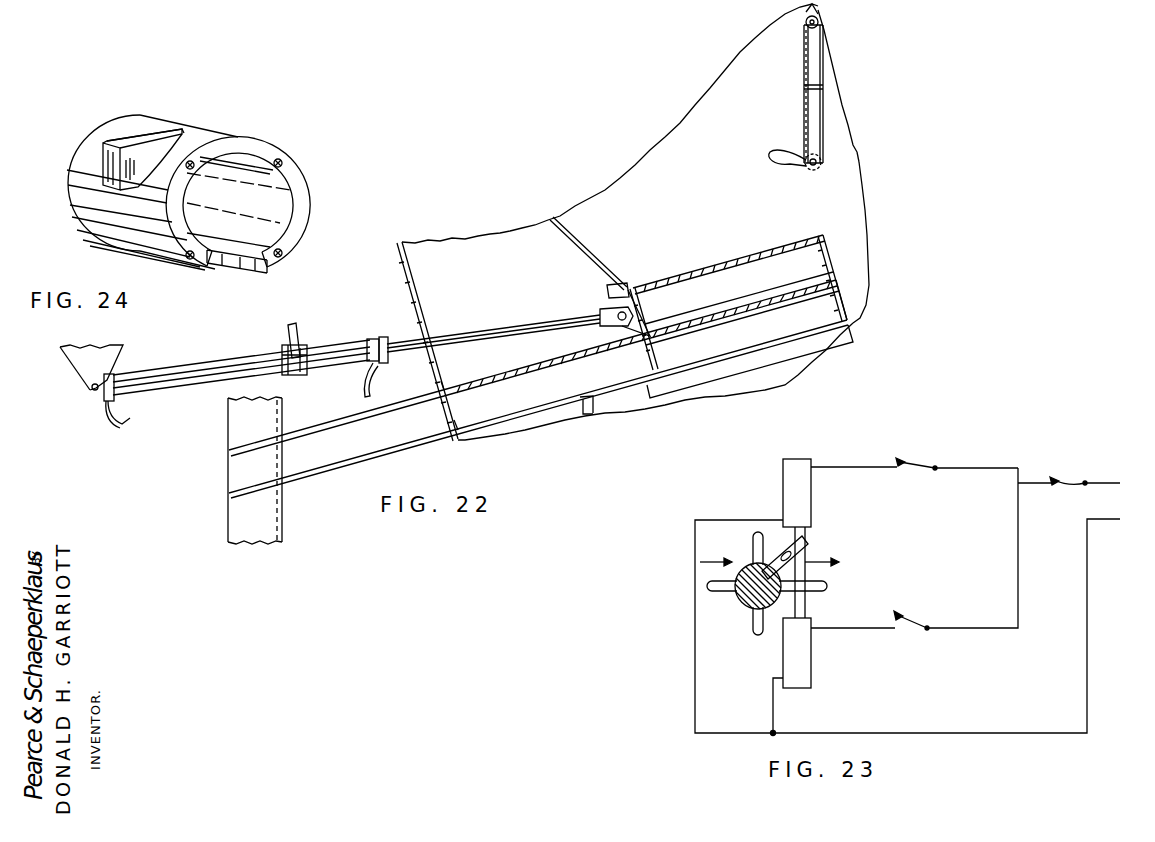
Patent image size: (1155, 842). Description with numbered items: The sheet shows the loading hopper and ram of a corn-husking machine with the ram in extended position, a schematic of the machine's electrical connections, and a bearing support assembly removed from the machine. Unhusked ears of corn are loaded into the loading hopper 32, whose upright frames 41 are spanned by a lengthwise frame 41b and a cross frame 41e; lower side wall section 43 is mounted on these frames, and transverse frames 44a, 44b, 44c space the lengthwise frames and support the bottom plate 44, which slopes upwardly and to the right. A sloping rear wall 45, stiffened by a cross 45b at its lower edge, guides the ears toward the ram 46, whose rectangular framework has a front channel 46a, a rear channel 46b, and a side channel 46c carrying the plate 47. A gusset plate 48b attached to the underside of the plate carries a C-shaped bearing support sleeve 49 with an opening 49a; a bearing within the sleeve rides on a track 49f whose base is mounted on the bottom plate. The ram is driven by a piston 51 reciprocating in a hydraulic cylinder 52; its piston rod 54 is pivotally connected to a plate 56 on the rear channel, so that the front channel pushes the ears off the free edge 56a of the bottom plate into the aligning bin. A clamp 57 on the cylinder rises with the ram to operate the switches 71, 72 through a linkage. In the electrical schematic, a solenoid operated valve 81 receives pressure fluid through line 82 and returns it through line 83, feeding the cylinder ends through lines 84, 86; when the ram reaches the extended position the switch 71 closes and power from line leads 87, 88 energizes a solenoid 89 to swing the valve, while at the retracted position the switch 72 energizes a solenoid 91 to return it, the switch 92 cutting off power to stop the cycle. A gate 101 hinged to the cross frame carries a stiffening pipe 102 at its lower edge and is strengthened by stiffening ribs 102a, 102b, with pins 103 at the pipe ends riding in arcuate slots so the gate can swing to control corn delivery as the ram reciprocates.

In FIG. 22, the loading hopper 32 is at (575, 220).
In FIG. 22, the upright frames 41 is at (237, 508).
In FIG. 22, the lengthwise frame 41b is at (383, 438).
In FIG. 22, the cross frame 41e is at (818, 15).
In FIG. 22, the lower side wall section 43 is at (623, 182).
In FIG. 22, the bottom plate 44 is at (513, 368).
In FIG. 22, the transverse frame 44a is at (447, 420).
In FIG. 22, the transverse frame 44b is at (653, 360).
In FIG. 22, the transverse frame 44c is at (843, 300).
In FIG. 22, the sloping rear wall 45 is at (590, 248).
In FIG. 22, the cross 45b is at (608, 292).
In FIG. 22, the ram 46 is at (717, 267).
In FIG. 22, the front channel 46a is at (858, 232).
In FIG. 22, the rear channel 46b is at (640, 323).
In FIG. 22, the side channel 46c is at (757, 263).
In FIG. 22, the plate 47 is at (673, 275).
In FIG. 24, the gusset plate 48b is at (143, 140).
In FIG. 24, the bearing support sleeve 49 is at (80, 195).
In FIG. 24, the opening 49a is at (257, 266).
In FIG. 22, the track 49f is at (450, 371).
In FIG. 22, the piston 51 is at (353, 338).
In FIG. 22, the cylinder 52 is at (163, 373).
In FIG. 22, the piston rod 54 is at (460, 335).
In FIG. 22, the plate 56 is at (627, 302).
In FIG. 22, the free edge 56a is at (835, 282).
In FIG. 22, the clamp 57 is at (297, 374).
In FIG. 23, the switch 71 is at (912, 615).
In FIG. 23, the switch 72 is at (910, 465).
In FIG. 23, the solenoid operated valve 81 is at (745, 606).
In FIG. 23, the line 82 is at (727, 590).
In FIG. 23, the line 83 is at (817, 590).
In FIG. 23, the line 84 is at (756, 550).
In FIG. 23, the line 86 is at (757, 626).
In FIG. 23, the line lead 87 is at (1136, 485).
In FIG. 23, the line lead 88 is at (924, 623).
In FIG. 23, the solenoid 89 is at (800, 658).
In FIG. 23, the solenoid 91 is at (787, 483).
In FIG. 23, the switch 92 is at (1062, 482).
In FIG. 22, the gate 101 is at (802, 102).
In FIG. 22, the stiffening pipe 102 is at (807, 172).
In FIG. 22, the stiffening rib 102a is at (817, 115).
In FIG. 22, the stiffening rib 102b is at (808, 78).
In FIG. 22, the pin 103 is at (823, 157).